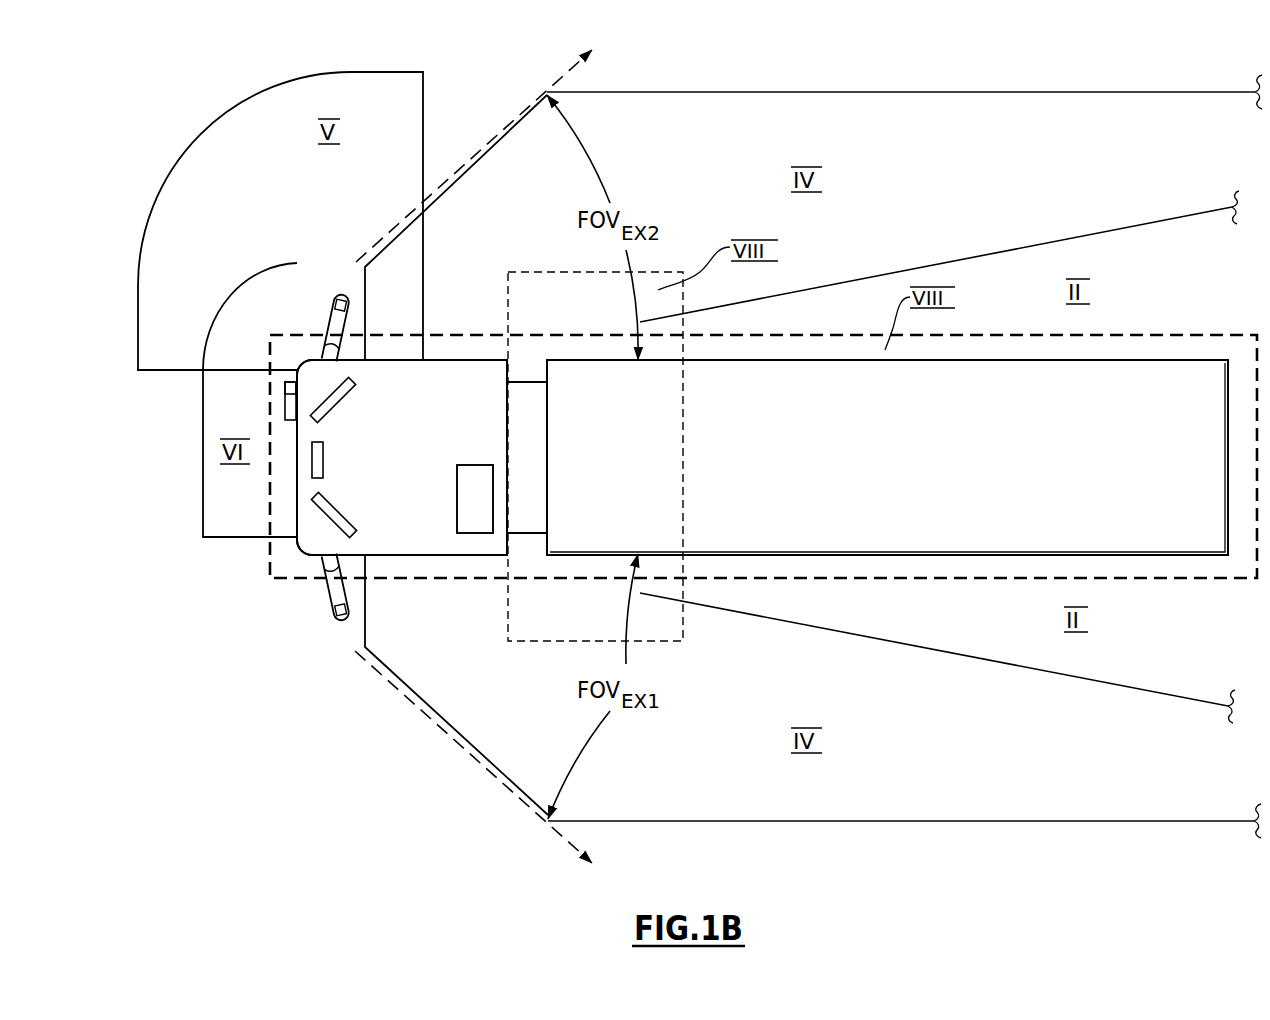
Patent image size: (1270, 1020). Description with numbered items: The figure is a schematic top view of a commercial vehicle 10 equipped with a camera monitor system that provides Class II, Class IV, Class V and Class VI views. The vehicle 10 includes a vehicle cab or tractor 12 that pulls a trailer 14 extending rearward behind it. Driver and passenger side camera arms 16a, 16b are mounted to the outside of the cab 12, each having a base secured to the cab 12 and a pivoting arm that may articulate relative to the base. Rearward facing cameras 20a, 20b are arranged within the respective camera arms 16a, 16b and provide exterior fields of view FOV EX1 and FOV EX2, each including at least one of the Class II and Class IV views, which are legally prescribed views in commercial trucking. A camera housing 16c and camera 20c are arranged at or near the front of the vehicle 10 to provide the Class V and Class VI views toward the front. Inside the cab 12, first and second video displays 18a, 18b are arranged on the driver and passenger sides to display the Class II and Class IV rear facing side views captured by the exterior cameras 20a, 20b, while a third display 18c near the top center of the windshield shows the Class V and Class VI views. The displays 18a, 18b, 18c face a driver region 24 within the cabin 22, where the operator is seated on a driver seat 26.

The commercial vehicle 10 is at (266, 345).
The vehicle cab 12 is at (294, 550).
The trailer 14 is at (1138, 355).
The driver side camera arm 16a is at (332, 599).
The passenger side camera arm 16b is at (326, 316).
The camera housing 16c is at (285, 407).
The first video display 18a is at (342, 515).
The second video display 18b is at (340, 404).
The third display 18c is at (310, 463).
The rearward facing camera 20a is at (349, 608).
The rearward facing camera 20b is at (348, 304).
The camera 20c is at (285, 388).
The cabin 22 is at (449, 376).
The driver region 24 is at (448, 492).
The driver seat 26 is at (478, 478).